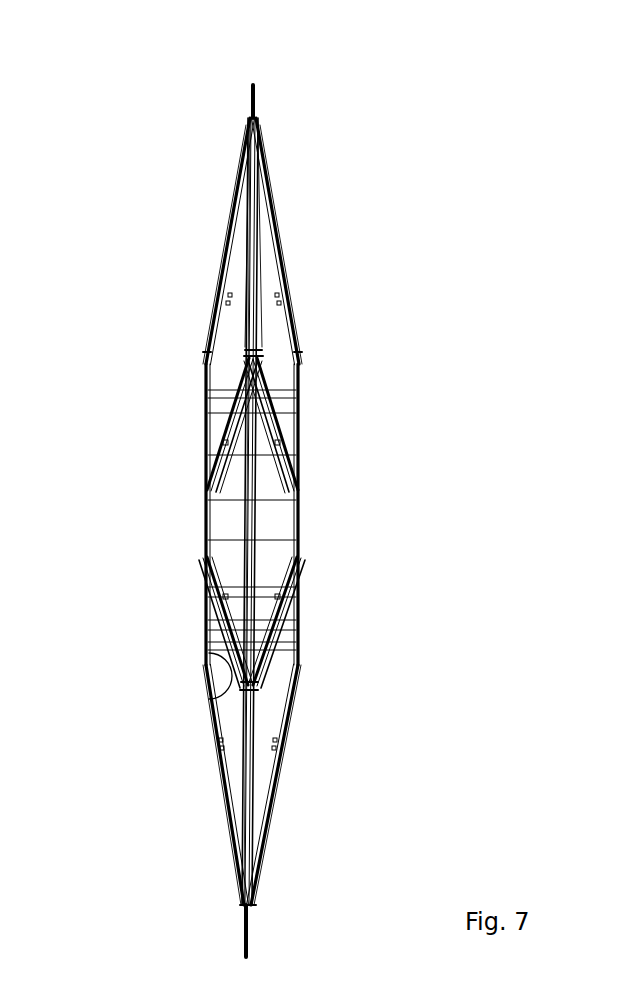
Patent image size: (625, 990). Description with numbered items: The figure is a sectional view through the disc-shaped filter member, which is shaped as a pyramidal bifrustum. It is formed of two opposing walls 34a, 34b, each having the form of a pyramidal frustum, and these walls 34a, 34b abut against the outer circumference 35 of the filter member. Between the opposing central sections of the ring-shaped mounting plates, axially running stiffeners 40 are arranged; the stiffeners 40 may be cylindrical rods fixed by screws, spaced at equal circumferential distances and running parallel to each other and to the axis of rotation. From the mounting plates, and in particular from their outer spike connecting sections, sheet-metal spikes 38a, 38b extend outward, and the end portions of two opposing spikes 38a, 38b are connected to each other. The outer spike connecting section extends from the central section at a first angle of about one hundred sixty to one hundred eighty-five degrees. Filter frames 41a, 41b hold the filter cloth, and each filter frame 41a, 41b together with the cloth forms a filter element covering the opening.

The outer circumference 35 is at (253, 85).
The filter frame 41b is at (230, 203).
The filter frame 41a is at (272, 198).
The wall 34b is at (203, 360).
The wall 34a is at (297, 357).
The stiffeners 40 is at (281, 497).
The spike 38b is at (208, 602).
The spike 38a is at (297, 619).